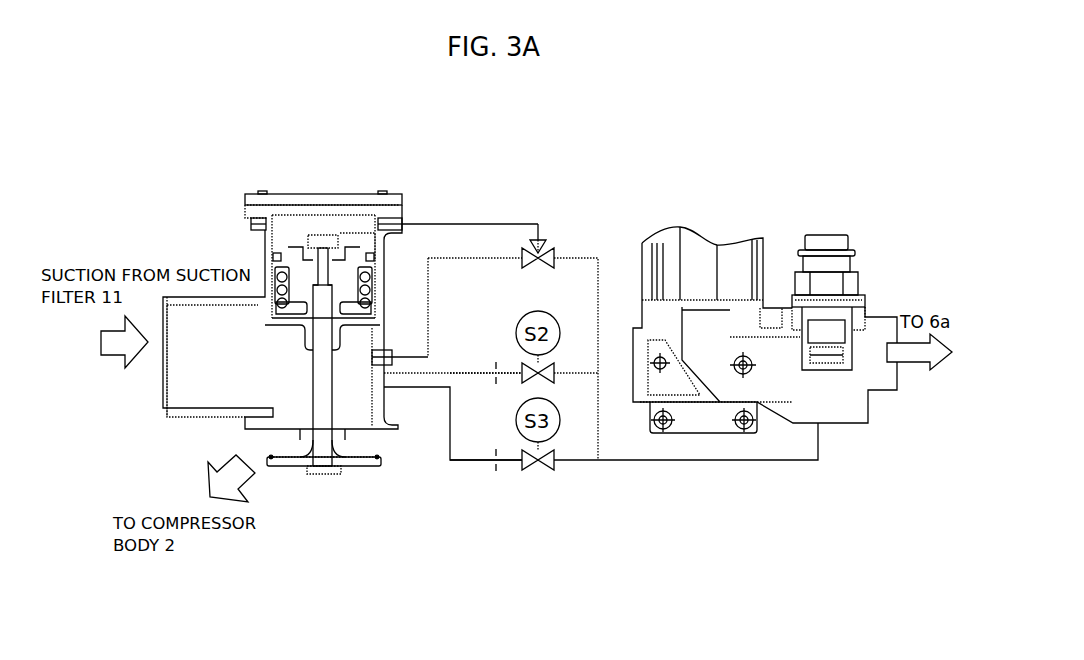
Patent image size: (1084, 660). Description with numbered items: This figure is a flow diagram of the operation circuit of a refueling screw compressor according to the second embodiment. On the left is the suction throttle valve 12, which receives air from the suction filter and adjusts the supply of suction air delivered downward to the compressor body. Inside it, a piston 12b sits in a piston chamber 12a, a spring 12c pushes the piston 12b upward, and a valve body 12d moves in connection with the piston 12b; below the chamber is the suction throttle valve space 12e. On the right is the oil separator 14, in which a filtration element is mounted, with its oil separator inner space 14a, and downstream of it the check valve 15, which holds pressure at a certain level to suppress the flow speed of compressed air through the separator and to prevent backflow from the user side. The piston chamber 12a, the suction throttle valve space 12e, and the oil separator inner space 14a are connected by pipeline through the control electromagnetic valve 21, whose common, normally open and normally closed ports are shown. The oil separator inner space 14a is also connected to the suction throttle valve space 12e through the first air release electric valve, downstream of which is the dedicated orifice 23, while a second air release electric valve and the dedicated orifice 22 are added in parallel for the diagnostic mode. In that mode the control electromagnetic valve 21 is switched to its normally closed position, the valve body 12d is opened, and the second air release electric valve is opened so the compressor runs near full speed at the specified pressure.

The suction throttle valve 12 is at (313, 192).
The piston chamber 12a is at (345, 233).
The piston 12b is at (300, 277).
The spring 12c is at (274, 287).
The valve body 12d is at (281, 468).
The suction throttle valve space 12e is at (350, 417).
The control electromagnetic valve 21 is at (544, 238).
The dedicated orifice 22 is at (495, 470).
The dedicated orifice 23 is at (490, 385).
The oil separator 14 is at (695, 278).
The oil separator inner space 14a is at (833, 400).
The check valve 15 is at (828, 237).